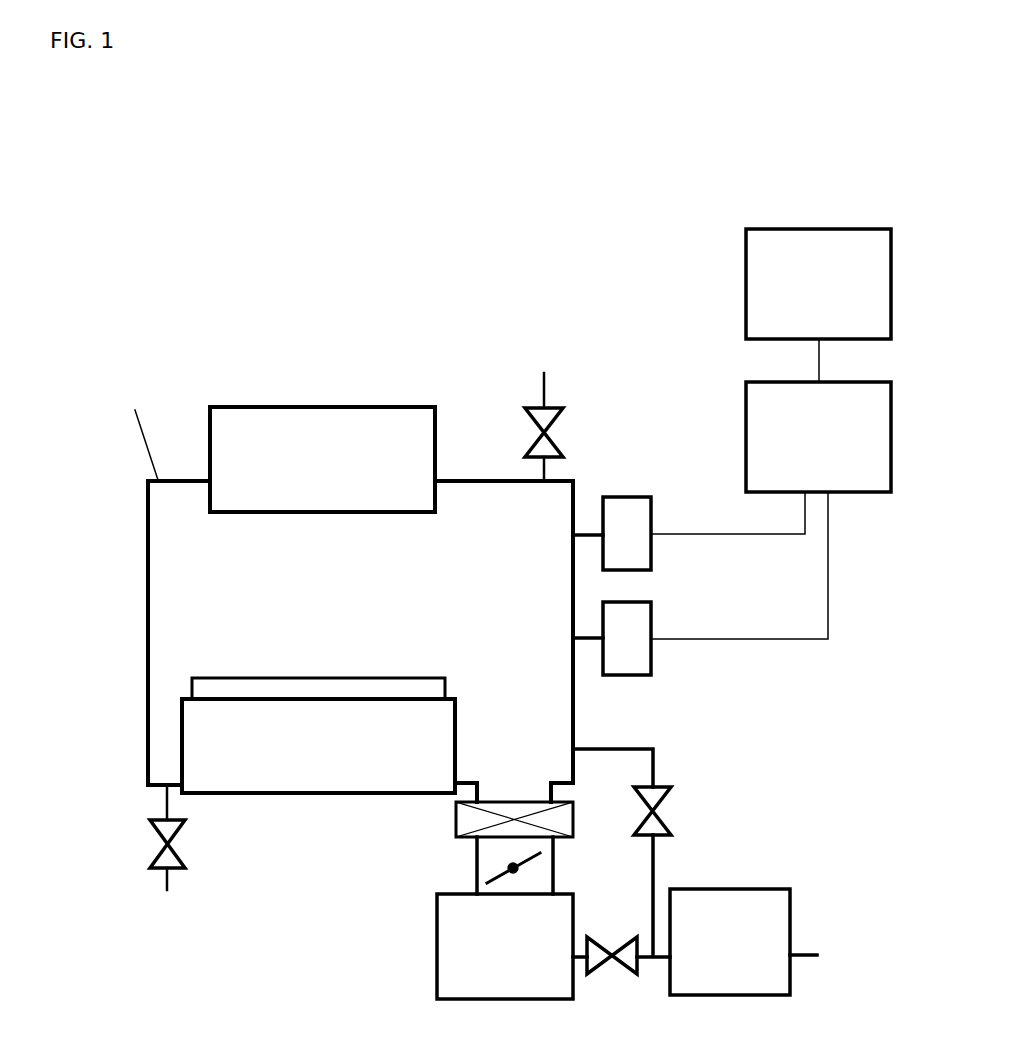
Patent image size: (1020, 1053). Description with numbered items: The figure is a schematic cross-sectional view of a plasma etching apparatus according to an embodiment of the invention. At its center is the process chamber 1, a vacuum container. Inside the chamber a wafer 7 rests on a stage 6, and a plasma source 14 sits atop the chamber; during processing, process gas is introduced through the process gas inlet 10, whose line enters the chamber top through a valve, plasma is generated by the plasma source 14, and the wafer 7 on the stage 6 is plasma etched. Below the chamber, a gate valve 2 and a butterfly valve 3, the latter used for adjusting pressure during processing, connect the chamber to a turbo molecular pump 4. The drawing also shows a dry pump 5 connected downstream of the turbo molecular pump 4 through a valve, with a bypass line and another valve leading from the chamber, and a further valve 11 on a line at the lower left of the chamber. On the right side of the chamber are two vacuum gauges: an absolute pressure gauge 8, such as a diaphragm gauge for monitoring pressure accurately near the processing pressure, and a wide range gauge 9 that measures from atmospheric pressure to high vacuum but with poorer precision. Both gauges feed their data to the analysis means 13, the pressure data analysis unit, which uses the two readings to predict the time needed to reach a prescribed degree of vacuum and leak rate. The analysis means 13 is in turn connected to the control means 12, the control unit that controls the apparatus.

The process chamber 1 is at (148, 578).
The gate valve 2 is at (456, 820).
The butterfly valve 3 is at (470, 865).
The turbo molecular pump 4 is at (437, 977).
The dry pump 5 is at (737, 887).
The stage 6 is at (318, 746).
The wafer 7 is at (330, 676).
The absolute pressure gauge 8 is at (615, 497).
The wide range gauge 9 is at (651, 626).
The process gas inlet 10 is at (530, 405).
The valve 11 is at (180, 843).
The control means 12 is at (790, 229).
The analysis means 13 is at (891, 390).
The plasma source 14 is at (322, 459).